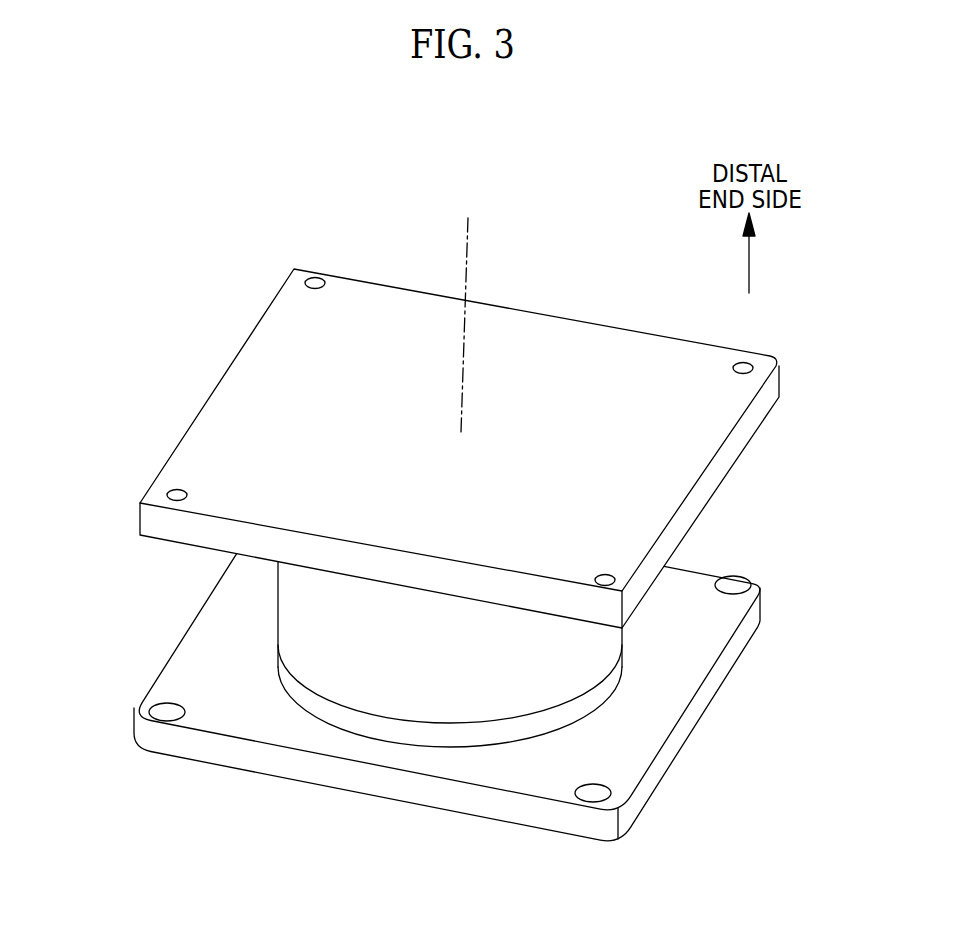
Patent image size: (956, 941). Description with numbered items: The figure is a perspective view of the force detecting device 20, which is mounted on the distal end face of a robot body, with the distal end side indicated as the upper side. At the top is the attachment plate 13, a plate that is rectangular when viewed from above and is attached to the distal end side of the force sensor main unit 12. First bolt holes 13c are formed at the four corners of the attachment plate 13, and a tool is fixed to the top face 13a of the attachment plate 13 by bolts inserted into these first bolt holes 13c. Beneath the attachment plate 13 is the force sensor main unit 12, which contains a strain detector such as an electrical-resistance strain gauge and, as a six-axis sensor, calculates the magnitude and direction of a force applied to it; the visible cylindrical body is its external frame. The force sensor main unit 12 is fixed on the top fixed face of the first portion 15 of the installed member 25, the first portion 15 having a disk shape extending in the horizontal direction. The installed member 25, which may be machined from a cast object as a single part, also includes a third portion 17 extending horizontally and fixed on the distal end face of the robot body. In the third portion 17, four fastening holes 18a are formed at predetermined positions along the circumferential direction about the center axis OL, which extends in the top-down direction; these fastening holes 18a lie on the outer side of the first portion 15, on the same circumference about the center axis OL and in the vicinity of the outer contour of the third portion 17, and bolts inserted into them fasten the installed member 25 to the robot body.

The force detecting device 20 is at (224, 204).
The attachment plate 13 is at (246, 375).
The top face 13a is at (638, 348).
The first bolt holes 13c is at (316, 279).
The center axis OL is at (465, 311).
The installed member 25 is at (102, 653).
The force sensor main unit 12 is at (292, 592).
The first portion 15 is at (280, 662).
The third portion 17 is at (700, 700).
The fastening holes 18a is at (168, 714).